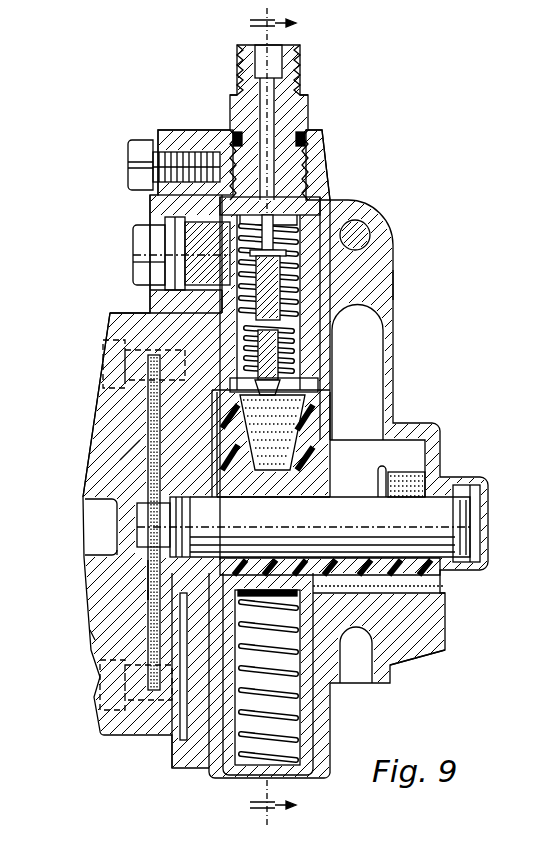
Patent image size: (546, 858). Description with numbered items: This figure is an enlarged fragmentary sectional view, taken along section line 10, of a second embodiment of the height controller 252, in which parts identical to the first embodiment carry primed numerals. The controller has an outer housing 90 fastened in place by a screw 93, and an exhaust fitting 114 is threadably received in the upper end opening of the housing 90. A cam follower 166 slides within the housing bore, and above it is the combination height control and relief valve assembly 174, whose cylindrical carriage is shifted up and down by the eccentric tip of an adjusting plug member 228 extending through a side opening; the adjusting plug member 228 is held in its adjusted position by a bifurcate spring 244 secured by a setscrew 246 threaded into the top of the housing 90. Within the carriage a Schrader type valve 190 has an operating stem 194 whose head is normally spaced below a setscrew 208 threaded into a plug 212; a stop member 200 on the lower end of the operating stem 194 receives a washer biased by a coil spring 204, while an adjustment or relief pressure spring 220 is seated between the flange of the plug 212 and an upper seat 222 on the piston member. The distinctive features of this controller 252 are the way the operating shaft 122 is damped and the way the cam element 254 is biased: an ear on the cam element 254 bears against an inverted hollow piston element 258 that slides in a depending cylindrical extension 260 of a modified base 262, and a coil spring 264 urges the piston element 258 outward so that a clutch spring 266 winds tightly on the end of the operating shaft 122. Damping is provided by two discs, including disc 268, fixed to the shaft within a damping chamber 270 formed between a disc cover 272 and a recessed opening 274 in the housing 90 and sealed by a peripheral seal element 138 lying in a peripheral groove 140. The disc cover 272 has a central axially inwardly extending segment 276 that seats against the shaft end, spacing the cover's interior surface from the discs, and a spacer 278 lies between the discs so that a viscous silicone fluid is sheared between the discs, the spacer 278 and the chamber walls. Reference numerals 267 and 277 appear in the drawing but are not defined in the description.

The section line 10- 10 is at (289, 416).
The exhaust fitting 114 is at (300, 107).
The bifurcate spring 244 is at (161, 135).
The setscrew 246 is at (143, 155).
The plug 212 is at (312, 202).
The screw 93 is at (360, 230).
The outer housing 90 is at (386, 225).
The adjusting plug member 228 is at (170, 243).
The controller 252 is at (393, 288).
The setscrew 208 is at (290, 279).
The adjustment or relief pressure spring 220 is at (300, 302).
The combination height control and relief valve assembly 174 is at (215, 322).
The upper seat 222 is at (300, 333).
The peripheral groove 140 is at (110, 342).
The Schrader type valve 190 is at (305, 380).
The operating stem 194 is at (225, 405).
The coil spring 204 is at (296, 393).
The disc 268 is at (148, 418).
The cam follower 166 is at (302, 450).
The wall 267 is at (160, 465).
The clutch spring / disc 266 is at (425, 483).
The central axially inwardly extending segment 276 is at (137, 522).
The stop member 200 is at (262, 494).
The damping chamber 270 is at (137, 555).
The spacer / interior surface 278 is at (148, 566).
The operating shaft 122 is at (450, 573).
The wall 277 is at (148, 596).
The disc cover 272 is at (105, 634).
The cam element 254 is at (354, 577).
The recessed opening 274 is at (108, 673).
The depending cylindrical extension 260 is at (330, 665).
The modified base 262 is at (405, 657).
The peripheral seal element 138 is at (150, 738).
The piston element 258 is at (212, 731).
The coil spring 264 is at (210, 768).